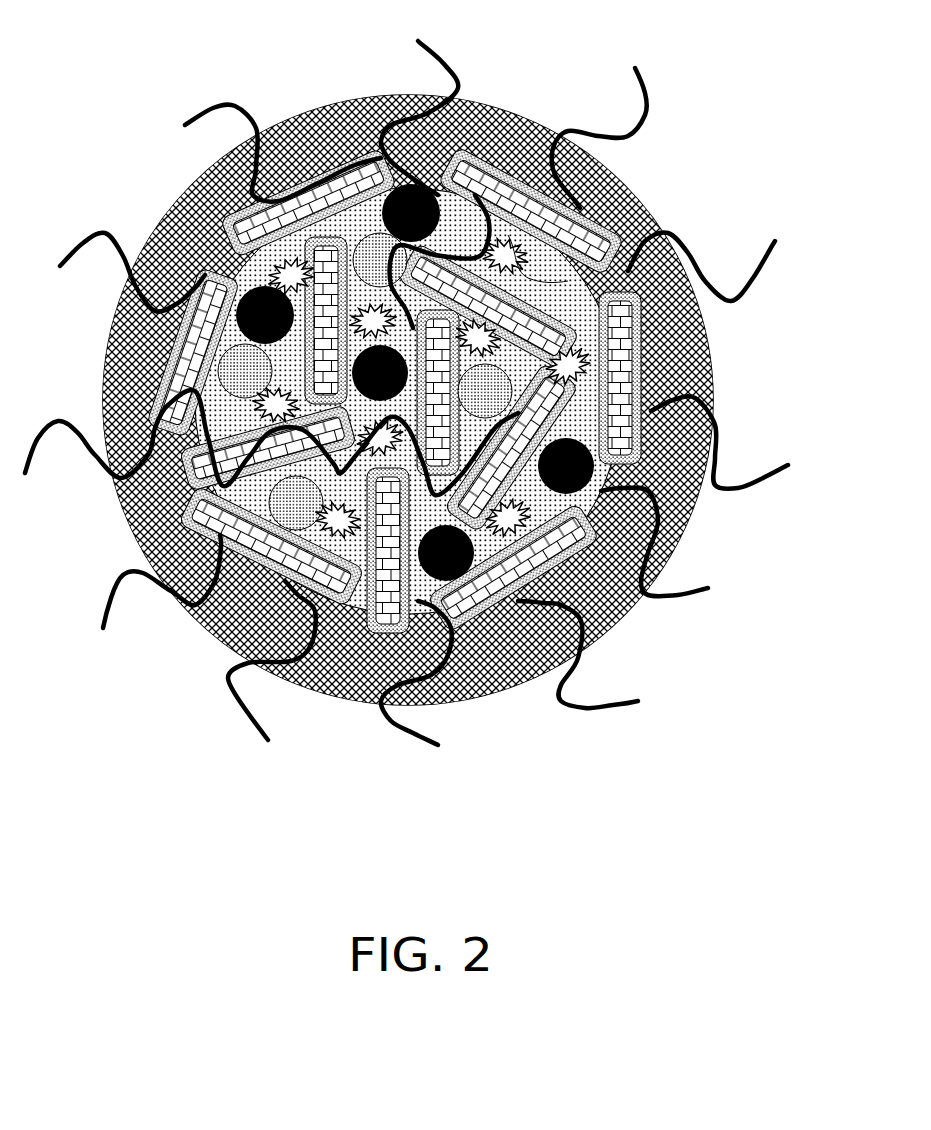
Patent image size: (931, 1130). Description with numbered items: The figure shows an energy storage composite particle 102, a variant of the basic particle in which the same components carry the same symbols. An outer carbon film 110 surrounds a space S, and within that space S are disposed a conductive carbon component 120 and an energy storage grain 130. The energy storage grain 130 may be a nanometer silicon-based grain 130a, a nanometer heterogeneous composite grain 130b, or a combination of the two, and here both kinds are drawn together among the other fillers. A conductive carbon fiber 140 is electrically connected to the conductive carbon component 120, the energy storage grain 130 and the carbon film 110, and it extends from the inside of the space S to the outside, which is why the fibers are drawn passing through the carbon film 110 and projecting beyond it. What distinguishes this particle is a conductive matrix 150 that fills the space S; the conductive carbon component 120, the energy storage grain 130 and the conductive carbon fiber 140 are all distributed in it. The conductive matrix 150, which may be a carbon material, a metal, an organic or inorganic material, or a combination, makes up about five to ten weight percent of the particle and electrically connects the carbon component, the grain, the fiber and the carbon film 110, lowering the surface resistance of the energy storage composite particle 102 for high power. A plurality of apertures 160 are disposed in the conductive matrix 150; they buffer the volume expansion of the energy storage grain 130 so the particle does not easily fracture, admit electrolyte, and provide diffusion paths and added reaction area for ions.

The energy storage composite particle 102 is at (445, 426).
The carbon film 110 is at (617, 193).
The conductive carbon component 120 is at (343, 163).
The energy storage grain 130 is at (505, 333).
The nanometer silicon-based grain 130a is at (626, 377).
The nanometer heterogeneous composite grain 130b is at (608, 338).
The conductive carbon fiber 140 is at (743, 480).
The conductive matrix 150 is at (465, 595).
The apertures 160 is at (207, 597).
The space S is at (531, 211).